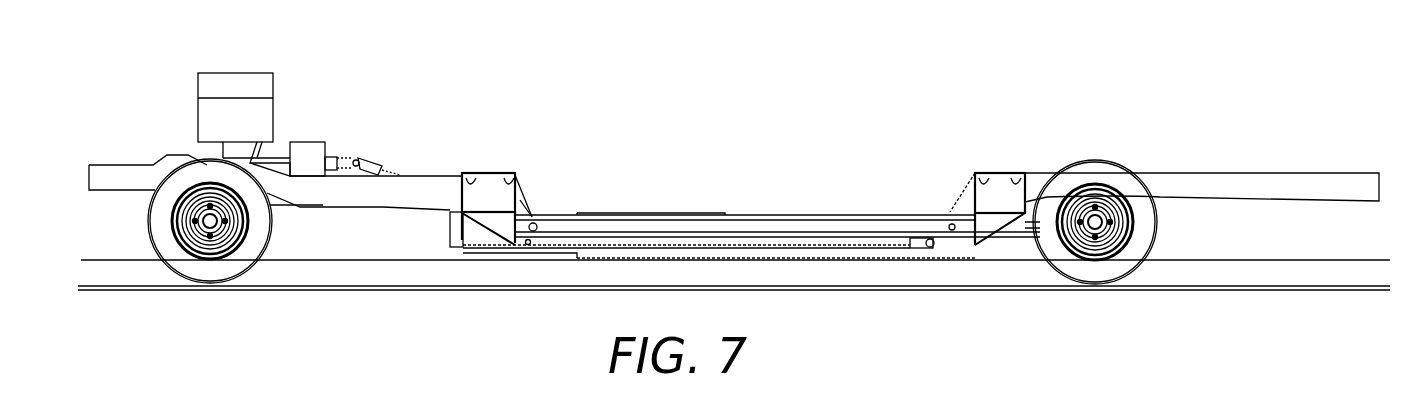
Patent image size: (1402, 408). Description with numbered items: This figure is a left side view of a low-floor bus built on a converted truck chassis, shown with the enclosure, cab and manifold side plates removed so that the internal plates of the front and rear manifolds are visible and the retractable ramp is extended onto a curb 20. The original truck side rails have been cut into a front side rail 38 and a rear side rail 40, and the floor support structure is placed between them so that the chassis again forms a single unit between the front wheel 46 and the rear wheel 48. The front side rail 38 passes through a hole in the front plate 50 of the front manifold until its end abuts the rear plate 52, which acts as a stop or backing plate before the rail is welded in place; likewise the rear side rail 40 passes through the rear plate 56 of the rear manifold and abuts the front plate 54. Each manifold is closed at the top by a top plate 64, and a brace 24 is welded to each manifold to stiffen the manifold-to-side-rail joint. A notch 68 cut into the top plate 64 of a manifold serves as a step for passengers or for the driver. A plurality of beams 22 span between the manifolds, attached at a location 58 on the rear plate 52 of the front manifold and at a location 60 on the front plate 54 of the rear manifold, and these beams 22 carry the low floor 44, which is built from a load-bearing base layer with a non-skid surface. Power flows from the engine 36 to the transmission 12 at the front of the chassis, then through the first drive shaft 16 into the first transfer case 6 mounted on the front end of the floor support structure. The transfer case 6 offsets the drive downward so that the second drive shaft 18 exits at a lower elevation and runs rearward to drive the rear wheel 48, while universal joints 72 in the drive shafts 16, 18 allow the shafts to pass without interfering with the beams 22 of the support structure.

The first transfer case 6 is at (450, 223).
The transmission 12 is at (306, 142).
The first drive shaft 16 is at (400, 175).
The second drive shaft 18 is at (812, 247).
The curb 20 is at (1315, 259).
The beam 22 is at (878, 232).
The brace 24 is at (475, 235).
The engine 36 is at (243, 73).
The front side rail 38 is at (383, 207).
The rear side rail 40 is at (1050, 170).
The floor 44 is at (808, 218).
The front wheel 46 is at (150, 230).
The rear wheel 48 is at (1158, 242).
The front plate of front manifold 50 is at (468, 178).
The rear plate of front manifold 52 is at (508, 178).
The front plate of rear manifold 54 is at (978, 178).
The rear plate of rear manifold 56 is at (1016, 178).
The location at which beam is attached to rear plate of front manifold 58 is at (525, 223).
The location at which beam is attached to front plate of rear manifold 60 is at (963, 223).
The top plate of front manifold or rear manifold 64 is at (490, 173).
The notch 68 is at (1243, 285).
The universal joint 72 is at (357, 162).